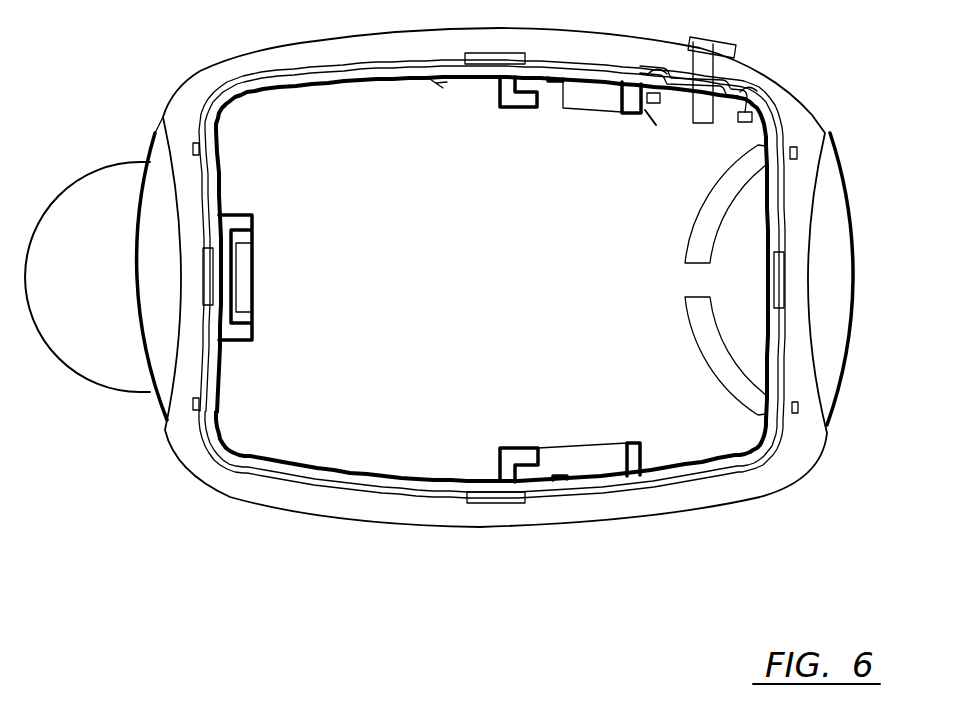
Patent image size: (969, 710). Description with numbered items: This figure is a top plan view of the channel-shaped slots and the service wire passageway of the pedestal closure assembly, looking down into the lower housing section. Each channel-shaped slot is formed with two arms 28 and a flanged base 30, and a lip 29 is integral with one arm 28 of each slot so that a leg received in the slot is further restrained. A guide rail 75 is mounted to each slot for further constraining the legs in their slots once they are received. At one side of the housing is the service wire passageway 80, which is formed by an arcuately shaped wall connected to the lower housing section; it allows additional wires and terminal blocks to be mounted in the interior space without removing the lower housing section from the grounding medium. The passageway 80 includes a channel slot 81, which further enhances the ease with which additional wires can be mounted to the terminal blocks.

The arm 28 is at (497, 97).
The lip 29 is at (520, 102).
The flanged base 30 is at (593, 450).
The guide rail 75 is at (553, 80).
The service wire passageway 80 is at (737, 283).
The channel slot 81 is at (688, 282).